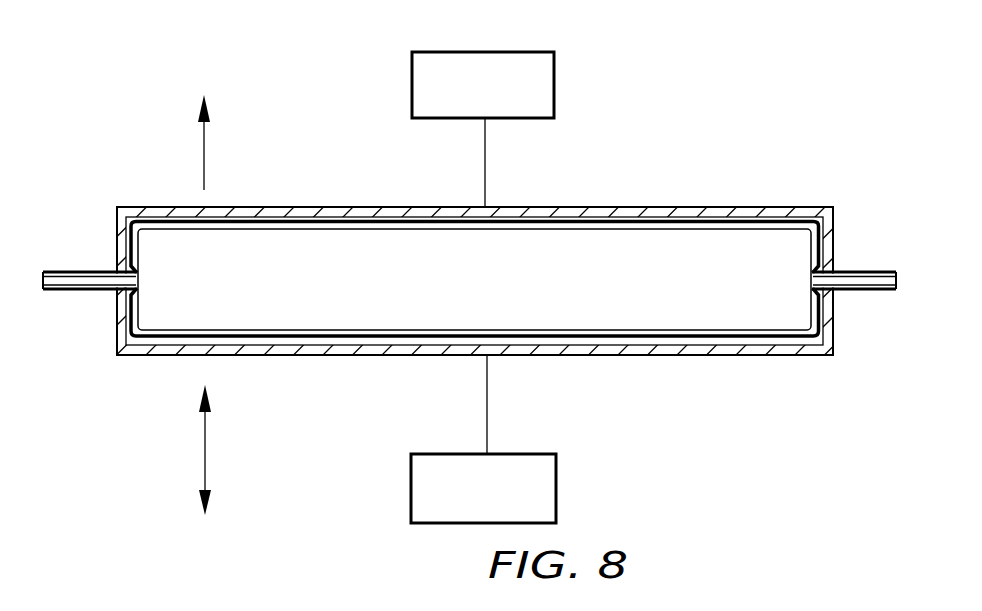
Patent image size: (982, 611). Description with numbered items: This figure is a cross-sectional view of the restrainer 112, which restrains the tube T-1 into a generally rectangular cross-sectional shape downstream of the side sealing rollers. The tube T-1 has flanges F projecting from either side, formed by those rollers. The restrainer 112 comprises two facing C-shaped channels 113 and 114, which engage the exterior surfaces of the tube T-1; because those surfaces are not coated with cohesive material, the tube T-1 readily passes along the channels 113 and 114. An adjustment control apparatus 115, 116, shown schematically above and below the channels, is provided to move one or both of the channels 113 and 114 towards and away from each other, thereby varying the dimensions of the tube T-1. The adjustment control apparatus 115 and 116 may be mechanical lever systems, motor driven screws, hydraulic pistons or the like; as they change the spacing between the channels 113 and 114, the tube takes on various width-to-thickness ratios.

The restrainer 112 is at (549, 192).
The C-shaped channel 113 is at (333, 207).
The C-shaped channel 114 is at (347, 356).
The adjustment control apparatus 115 is at (555, 78).
The adjustment control apparatus 116 is at (552, 482).
The tube T-1 is at (743, 222).
The flange F is at (88, 292).